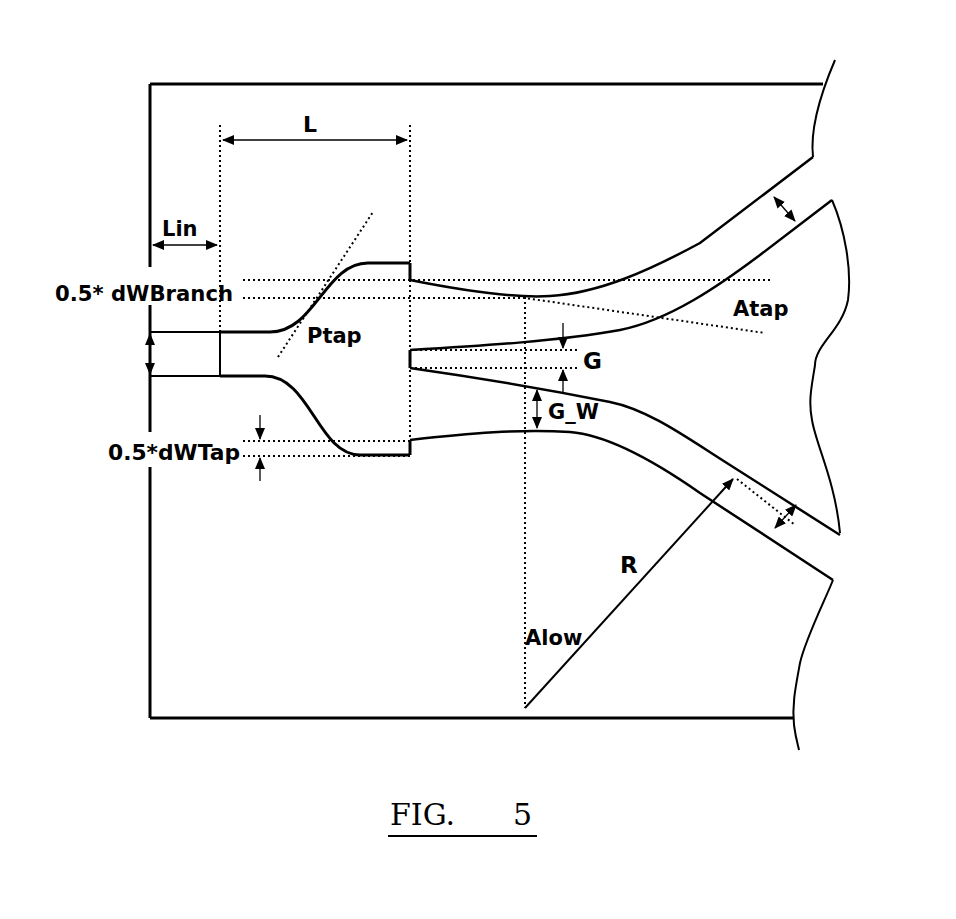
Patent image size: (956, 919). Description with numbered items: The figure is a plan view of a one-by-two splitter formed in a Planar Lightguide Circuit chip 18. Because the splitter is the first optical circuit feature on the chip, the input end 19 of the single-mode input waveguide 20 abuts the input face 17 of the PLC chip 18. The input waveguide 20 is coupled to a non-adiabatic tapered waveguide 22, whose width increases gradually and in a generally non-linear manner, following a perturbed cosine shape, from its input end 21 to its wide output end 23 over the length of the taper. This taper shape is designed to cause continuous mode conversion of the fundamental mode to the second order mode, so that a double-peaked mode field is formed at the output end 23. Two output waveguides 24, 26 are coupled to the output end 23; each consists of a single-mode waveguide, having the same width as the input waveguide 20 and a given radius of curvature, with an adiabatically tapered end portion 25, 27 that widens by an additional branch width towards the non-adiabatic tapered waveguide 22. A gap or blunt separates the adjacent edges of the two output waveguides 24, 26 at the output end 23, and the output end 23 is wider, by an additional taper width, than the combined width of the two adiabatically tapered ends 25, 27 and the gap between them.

The input face 17 is at (145, 563).
The Planar Lightguide Circuit (PLC) chip 18 is at (586, 84).
The input end of the input waveguide 19 is at (142, 355).
The input waveguide 20 is at (173, 378).
The input end of the tapered waveguide 21 is at (256, 332).
The non-adiabatic tapered waveguide 22 is at (297, 402).
The output end of the tapered waveguide 23 is at (420, 264).
The output waveguide 24 is at (621, 250).
The adiabatically tapered end portion 25 is at (478, 292).
The output waveguide 26 is at (634, 475).
The adiabatically tapered end portion 27 is at (470, 445).